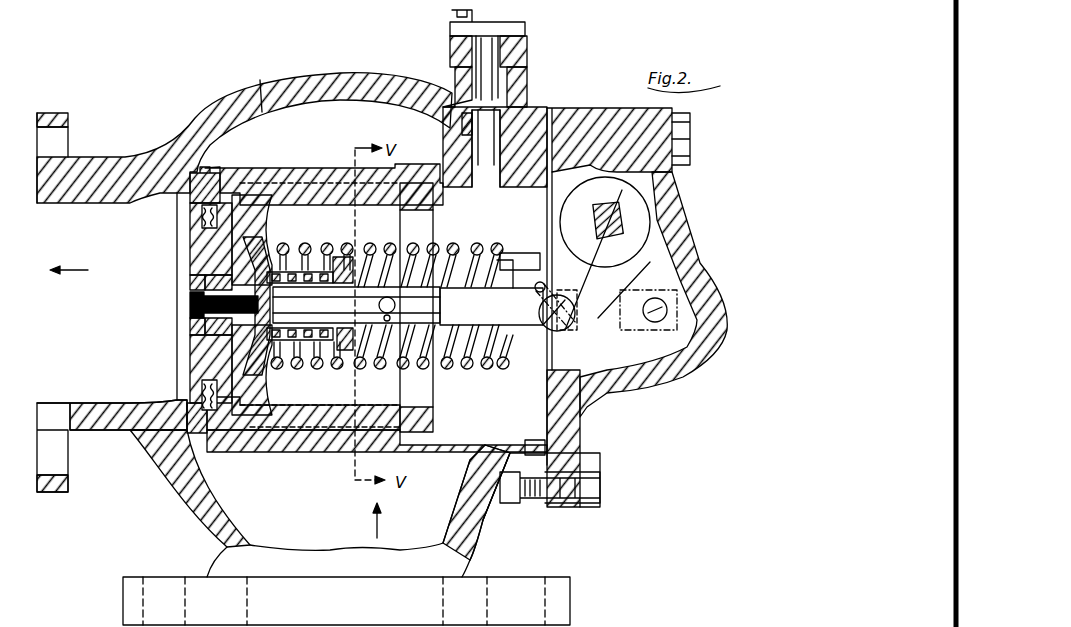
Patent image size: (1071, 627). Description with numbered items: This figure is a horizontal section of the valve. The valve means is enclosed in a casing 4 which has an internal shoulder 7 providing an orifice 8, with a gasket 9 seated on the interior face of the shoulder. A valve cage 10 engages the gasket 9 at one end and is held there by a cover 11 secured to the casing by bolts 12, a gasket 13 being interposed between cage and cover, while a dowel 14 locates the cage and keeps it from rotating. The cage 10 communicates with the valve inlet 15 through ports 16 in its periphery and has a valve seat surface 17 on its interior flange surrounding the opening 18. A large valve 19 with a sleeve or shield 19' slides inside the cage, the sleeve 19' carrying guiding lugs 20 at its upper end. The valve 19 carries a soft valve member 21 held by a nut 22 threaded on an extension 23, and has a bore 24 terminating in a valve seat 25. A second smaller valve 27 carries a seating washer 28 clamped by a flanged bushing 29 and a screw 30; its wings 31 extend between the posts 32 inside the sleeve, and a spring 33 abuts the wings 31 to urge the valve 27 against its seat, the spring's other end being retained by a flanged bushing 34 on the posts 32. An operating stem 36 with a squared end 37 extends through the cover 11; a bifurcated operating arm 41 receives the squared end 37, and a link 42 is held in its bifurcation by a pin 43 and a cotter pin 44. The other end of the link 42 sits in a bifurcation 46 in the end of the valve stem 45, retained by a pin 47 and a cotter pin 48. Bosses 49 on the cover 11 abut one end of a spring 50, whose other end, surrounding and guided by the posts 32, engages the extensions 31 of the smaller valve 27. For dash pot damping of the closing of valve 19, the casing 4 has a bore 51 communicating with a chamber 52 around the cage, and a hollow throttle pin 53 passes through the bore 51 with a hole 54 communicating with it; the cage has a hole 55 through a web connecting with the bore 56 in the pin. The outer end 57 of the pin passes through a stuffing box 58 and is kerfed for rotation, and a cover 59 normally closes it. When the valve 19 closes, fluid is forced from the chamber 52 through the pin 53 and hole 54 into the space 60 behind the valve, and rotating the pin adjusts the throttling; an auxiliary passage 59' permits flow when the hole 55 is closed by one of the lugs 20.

The casing 4 is at (232, 115).
The internal shoulder 7 is at (185, 180).
The orifice 8 is at (180, 205).
The gasket 9 is at (185, 200).
The valve cage 10 is at (302, 168).
The cover 11 is at (575, 444).
The bolts 12 is at (690, 125).
The gasket 13 is at (580, 416).
The dowel 14 is at (530, 440).
The valve inlet 15 is at (255, 512).
The ports 16 is at (250, 160).
The valve seat surface 17 is at (200, 168).
The opening 18 is at (202, 218).
The large valve 19 is at (147, 375).
The sleeve or shield 19' is at (328, 140).
The guiding lugs 20 is at (433, 200).
The soft valve member 21 is at (275, 168).
The nut 22 is at (190, 248).
The extension 23 is at (190, 280).
The bore 24 is at (205, 325).
The valve seat 25 is at (210, 345).
The second smaller valve 27 is at (295, 287).
The seating washer 28 is at (205, 283).
The flanged bushing 29 is at (190, 305).
The screw 30 is at (260, 245).
The wings 31 is at (315, 258).
The posts 32 is at (305, 272).
The spring 33 is at (340, 270).
The flanged bushing 34 is at (385, 270).
The operating stem 36 is at (670, 260).
The squared end 37 is at (660, 200).
The bifurcated operating arm 41 is at (625, 225).
The link 42 is at (537, 282).
The pin 43 is at (562, 298).
The cotter pin 44 is at (551, 291).
The valve stem 45 is at (333, 352).
The bifurcation 46 is at (370, 298).
The pin 47 is at (448, 304).
The cotter pin 48 is at (405, 370).
The bosses 49 is at (522, 250).
The spring 50 is at (455, 255).
The bore 51 is at (505, 130).
The chamber 52 is at (366, 75).
The hollow throttle pin 53 is at (515, 105).
The hole 54 is at (465, 130).
The hole 55 is at (500, 175).
The bore 56 is at (560, 130).
The outer end 57 is at (495, 52).
The stuffing box 58 is at (458, 78).
The cover 59 is at (466, 23).
The auxiliary passage 59' is at (635, 99).
The space 60 is at (470, 391).